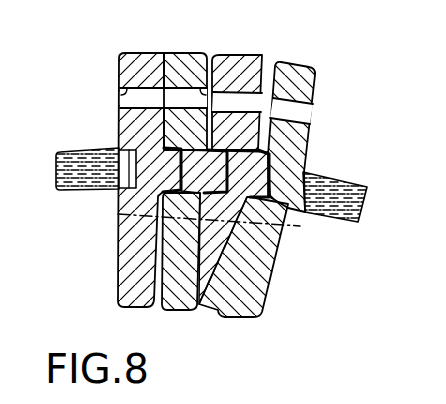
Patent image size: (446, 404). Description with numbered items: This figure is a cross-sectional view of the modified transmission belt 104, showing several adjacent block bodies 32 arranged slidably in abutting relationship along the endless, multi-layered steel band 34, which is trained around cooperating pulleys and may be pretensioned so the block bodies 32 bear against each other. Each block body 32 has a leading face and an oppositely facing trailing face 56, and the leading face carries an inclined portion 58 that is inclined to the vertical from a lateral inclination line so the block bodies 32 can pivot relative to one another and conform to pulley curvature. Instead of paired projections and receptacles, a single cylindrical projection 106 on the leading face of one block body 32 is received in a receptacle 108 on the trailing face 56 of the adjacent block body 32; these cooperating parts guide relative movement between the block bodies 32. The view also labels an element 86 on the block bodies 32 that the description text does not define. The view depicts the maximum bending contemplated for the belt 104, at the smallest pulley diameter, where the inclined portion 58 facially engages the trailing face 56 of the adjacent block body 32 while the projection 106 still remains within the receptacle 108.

The block bodies 32 is at (182, 51).
The endless multi-layered steel band 34 is at (77, 152).
The trailing face 56 is at (225, 268).
The inclined portion 58 is at (263, 303).
The retaining ring groove 86 is at (119, 95).
The modified transmission belt 104 is at (352, 100).
The projection 106 is at (300, 168).
The receptacle 108 is at (120, 215).